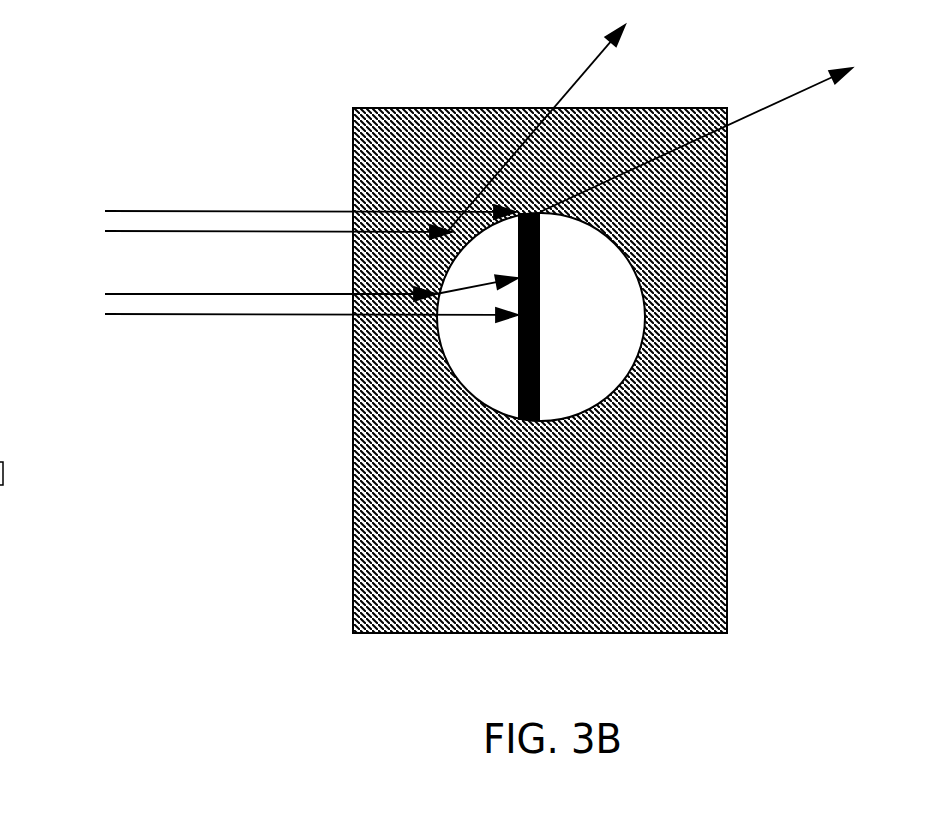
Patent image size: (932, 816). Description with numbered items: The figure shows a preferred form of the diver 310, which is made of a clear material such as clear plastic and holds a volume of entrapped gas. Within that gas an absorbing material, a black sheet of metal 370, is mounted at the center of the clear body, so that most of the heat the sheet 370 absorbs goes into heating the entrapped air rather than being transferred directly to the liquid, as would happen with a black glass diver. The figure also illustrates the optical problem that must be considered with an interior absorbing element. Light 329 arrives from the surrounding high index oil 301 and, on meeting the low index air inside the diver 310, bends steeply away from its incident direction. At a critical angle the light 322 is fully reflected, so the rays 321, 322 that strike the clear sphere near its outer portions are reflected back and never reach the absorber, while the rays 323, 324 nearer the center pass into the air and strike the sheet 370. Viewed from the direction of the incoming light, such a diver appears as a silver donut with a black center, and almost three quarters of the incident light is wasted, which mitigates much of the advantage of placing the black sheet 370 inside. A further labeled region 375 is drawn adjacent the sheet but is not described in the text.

The high index oil 301 is at (393, 505).
The diver 310 is at (643, 380).
The reflected ray 321 is at (729, 140).
The reflected light 322 is at (568, 121).
The transmitted ray 323 is at (477, 274).
The transmitted ray 324 is at (311, 327).
The light 329 is at (310, 253).
The black sheet of metal 370 is at (609, 310).
The absorbing layer 375 is at (577, 392).